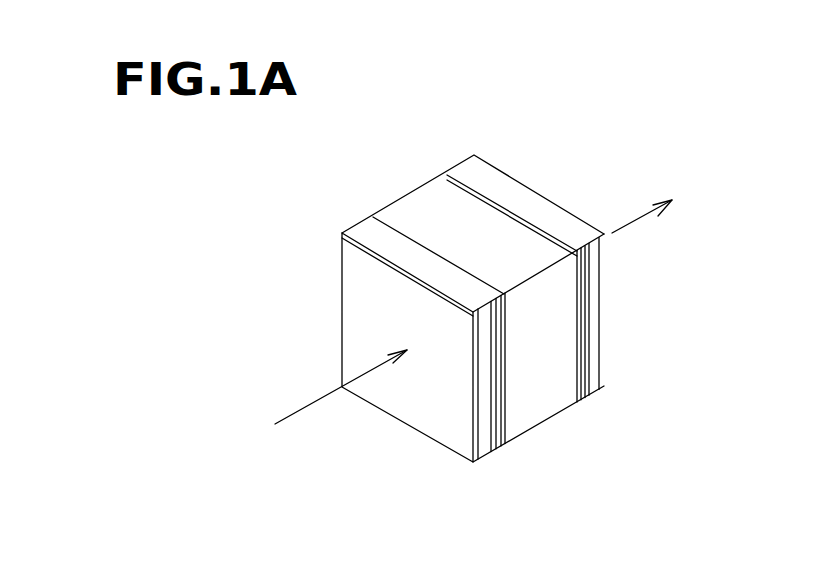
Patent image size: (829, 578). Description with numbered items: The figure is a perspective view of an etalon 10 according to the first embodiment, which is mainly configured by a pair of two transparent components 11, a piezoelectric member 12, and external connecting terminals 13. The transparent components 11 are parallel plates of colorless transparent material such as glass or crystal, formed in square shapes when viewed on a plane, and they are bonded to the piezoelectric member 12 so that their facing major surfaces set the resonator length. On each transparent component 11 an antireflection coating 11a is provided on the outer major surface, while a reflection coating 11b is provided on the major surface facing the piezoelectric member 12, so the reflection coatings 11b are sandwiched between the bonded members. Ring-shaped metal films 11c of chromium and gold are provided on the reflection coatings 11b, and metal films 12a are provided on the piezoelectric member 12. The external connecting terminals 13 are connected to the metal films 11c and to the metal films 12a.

The etalon 10 is at (372, 172).
The transparent component 11 is at (488, 452).
The antireflection coating 11a is at (478, 455).
The reflection coating 11b is at (493, 450).
The metal film 11c is at (500, 447).
The piezoelectric member 12 is at (547, 415).
The metal film 12a is at (587, 400).
The external connecting terminal 13 is at (366, 227).